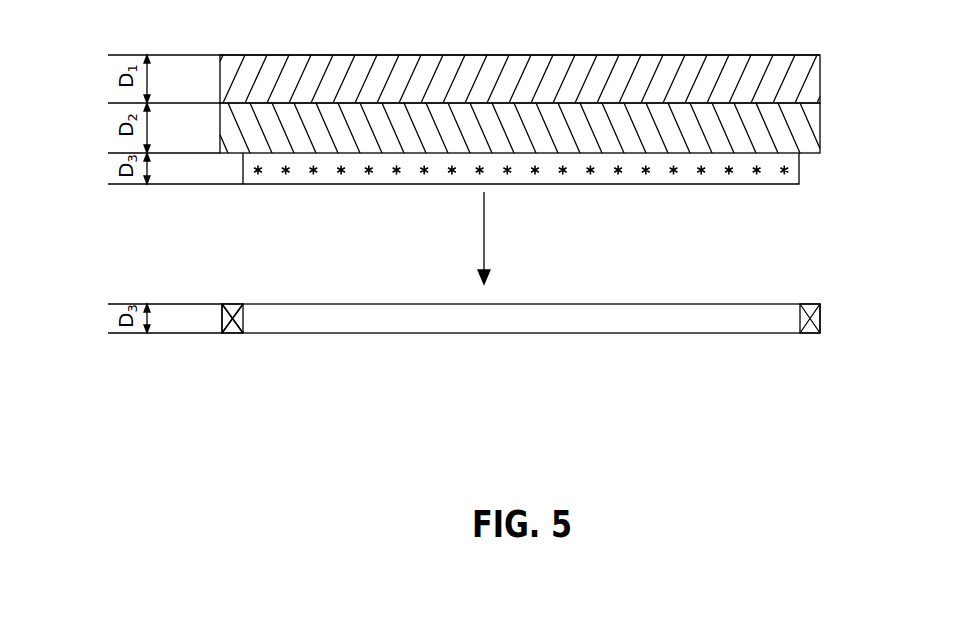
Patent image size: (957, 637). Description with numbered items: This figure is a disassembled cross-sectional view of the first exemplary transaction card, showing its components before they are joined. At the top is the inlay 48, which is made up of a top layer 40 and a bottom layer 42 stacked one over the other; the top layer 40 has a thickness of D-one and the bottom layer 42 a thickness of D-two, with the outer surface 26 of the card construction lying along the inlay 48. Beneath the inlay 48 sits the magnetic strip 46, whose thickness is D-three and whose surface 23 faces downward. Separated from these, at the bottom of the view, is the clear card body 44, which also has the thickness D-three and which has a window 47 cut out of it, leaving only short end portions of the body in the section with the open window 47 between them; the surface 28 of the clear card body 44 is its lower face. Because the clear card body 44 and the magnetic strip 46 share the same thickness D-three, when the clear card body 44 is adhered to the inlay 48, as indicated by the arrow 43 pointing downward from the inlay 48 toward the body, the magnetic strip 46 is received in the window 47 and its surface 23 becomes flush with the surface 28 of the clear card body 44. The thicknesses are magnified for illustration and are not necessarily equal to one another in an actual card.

The surface 26 is at (478, 56).
The top layer 40 is at (802, 83).
The bottom layer 42 is at (800, 130).
The inlay 48 is at (587, 104).
The surface of magnetic strip 23 is at (521, 200).
The magnetic strip 46 is at (714, 168).
The arrow 43 is at (481, 222).
The window 47 is at (457, 323).
The surface of clear card body 28 is at (238, 329).
The clear card body 44 is at (232, 322).